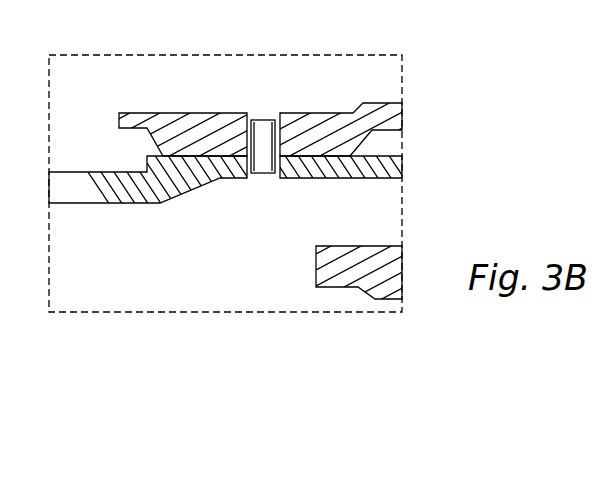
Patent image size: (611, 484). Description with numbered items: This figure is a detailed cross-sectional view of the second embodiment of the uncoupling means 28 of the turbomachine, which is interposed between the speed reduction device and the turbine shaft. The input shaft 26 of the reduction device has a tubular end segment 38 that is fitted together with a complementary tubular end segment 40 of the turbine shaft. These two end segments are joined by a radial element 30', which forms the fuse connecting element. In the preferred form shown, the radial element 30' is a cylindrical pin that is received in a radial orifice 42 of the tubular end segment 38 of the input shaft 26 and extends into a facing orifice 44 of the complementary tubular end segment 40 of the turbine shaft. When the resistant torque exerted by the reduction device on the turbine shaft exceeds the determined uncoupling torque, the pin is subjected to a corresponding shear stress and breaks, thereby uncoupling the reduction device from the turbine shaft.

The input shaft 26 is at (84, 188).
The uncoupling means 28 is at (402, 207).
The radial element 30' is at (283, 95).
The tubular end segment 38 is at (231, 174).
The complementary tubular end segment 40 is at (313, 113).
The radial orifice 42 is at (272, 176).
The orifice 44 is at (256, 117).